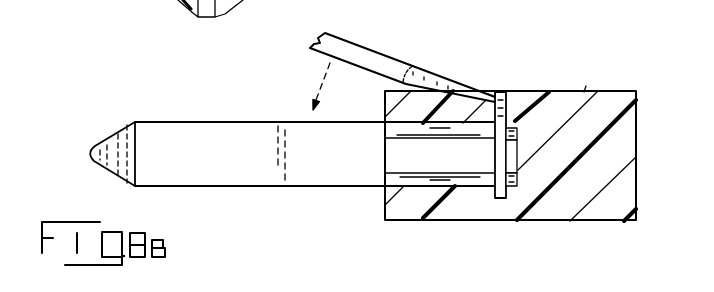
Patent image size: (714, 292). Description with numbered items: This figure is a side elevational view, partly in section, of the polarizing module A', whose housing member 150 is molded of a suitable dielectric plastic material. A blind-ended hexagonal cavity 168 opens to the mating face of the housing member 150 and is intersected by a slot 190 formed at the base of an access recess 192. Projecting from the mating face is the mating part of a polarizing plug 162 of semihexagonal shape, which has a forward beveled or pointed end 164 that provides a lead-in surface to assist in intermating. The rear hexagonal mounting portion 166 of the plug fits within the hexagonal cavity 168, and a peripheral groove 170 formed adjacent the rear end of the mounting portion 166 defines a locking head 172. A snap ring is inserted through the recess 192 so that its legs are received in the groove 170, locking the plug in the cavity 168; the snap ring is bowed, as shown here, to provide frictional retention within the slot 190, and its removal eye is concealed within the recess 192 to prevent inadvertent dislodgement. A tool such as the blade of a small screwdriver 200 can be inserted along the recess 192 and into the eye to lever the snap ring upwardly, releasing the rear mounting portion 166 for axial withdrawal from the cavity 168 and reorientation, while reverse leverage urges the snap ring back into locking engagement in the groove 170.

The housing member 150 is at (607, 92).
The polarizing plug 162 is at (260, 122).
The forward beveled or pointed end 164 is at (108, 131).
The rear hexagonal mounting portion 166 is at (432, 160).
The hexagonal cavity 168 is at (448, 186).
The groove 170 is at (493, 190).
The locking head 172 is at (518, 143).
The slot 190 is at (507, 107).
The access recess 192 is at (494, 93).
The screwdriver 200 is at (353, 47).
The polarizing module A' is at (599, 54).